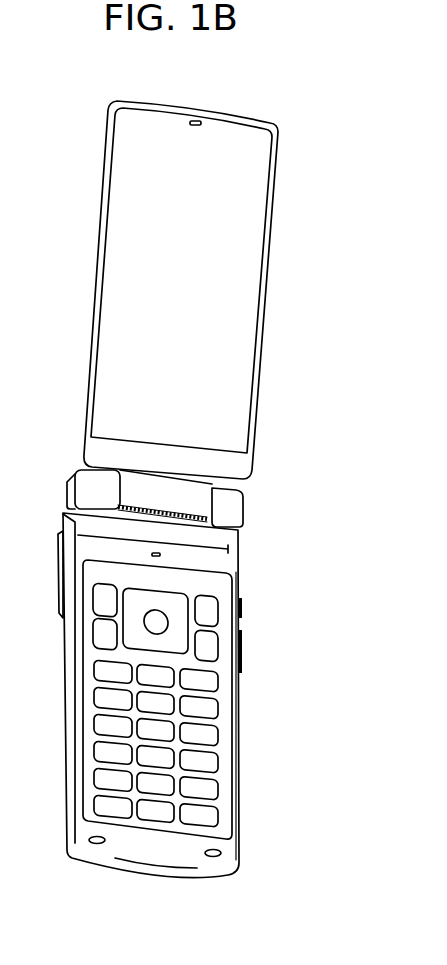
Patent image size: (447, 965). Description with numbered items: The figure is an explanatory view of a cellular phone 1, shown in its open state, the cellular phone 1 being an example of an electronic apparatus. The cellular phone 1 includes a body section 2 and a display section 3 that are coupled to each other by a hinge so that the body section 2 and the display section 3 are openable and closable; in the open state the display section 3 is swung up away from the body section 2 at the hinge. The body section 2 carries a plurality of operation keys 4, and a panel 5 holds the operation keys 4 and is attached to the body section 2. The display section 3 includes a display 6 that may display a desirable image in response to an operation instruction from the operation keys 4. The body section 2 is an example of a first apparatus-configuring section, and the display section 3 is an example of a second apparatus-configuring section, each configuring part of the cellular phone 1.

The cellular phone 1 is at (68, 404).
The body section 2 is at (239, 820).
The display section 3 is at (263, 328).
The operation keys 4 is at (207, 702).
The panel 5 is at (218, 590).
The display 6 is at (233, 233).